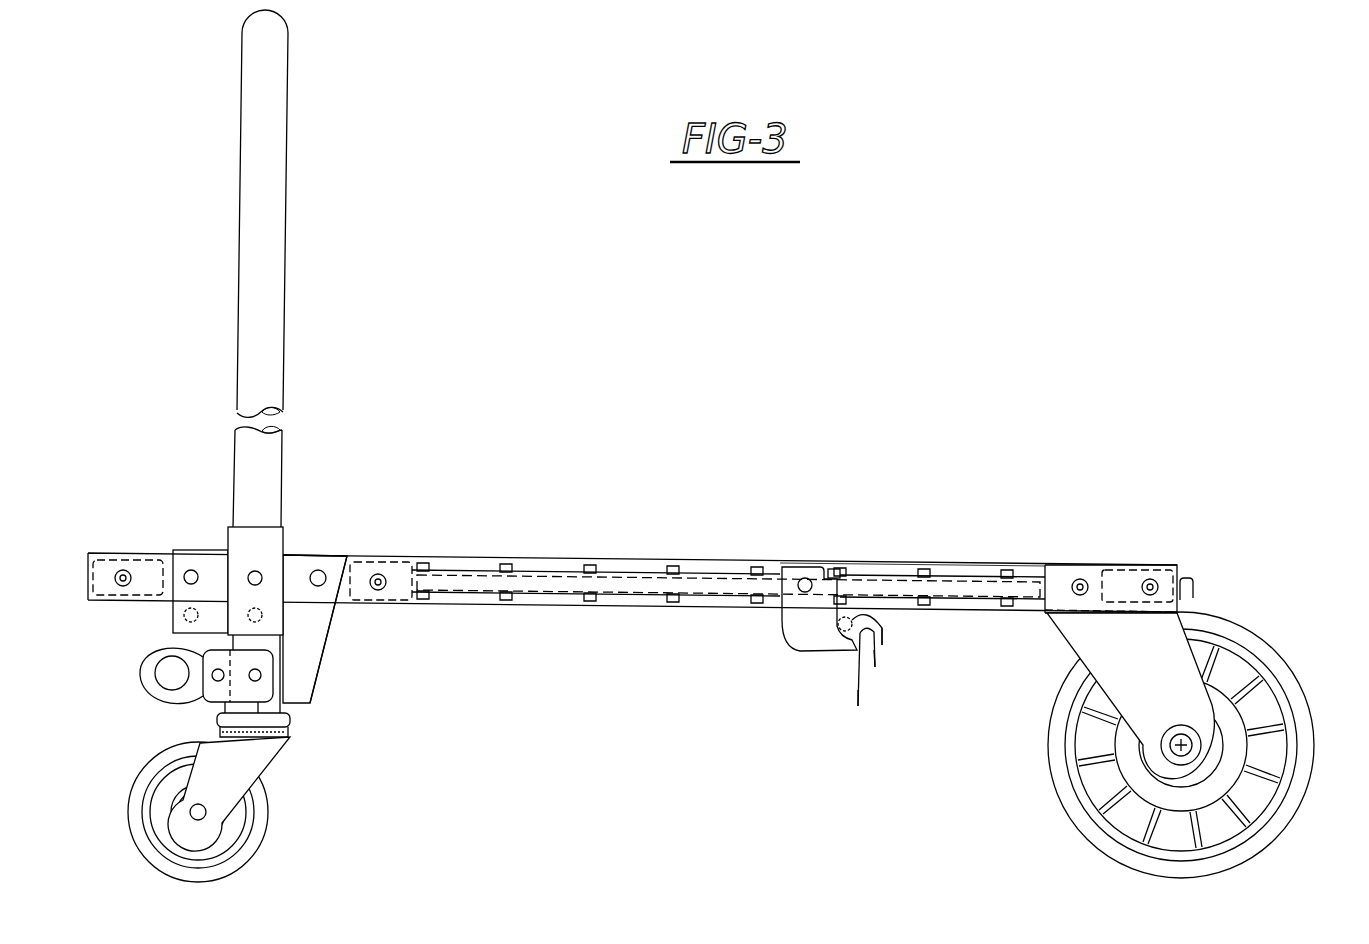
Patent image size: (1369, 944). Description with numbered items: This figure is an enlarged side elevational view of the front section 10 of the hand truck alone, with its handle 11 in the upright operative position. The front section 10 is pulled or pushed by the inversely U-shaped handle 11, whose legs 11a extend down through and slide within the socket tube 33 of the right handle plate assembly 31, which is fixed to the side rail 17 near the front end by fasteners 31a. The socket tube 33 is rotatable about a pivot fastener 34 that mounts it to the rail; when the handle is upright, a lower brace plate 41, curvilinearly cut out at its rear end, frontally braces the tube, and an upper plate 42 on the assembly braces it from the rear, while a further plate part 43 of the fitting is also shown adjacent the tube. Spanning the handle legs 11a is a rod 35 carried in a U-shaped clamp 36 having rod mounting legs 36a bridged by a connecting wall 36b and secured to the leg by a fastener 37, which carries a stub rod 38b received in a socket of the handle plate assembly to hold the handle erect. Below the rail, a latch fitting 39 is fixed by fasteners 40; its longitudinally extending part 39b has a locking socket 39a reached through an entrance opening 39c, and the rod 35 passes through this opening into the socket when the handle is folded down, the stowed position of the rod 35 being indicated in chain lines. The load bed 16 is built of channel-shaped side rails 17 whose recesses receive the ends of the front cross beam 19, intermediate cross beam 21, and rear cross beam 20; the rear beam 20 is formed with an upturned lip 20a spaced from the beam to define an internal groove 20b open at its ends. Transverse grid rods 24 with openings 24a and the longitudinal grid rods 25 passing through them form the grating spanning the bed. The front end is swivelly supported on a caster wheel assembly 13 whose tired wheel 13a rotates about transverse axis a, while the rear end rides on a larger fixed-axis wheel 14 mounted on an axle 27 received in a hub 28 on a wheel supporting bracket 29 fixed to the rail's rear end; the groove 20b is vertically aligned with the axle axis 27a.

The front section 10 is at (905, 428).
The handle 11 is at (290, 235).
The handle legs 11a is at (243, 447).
The caster wheel assembly 13 is at (120, 832).
The tired wheel 13a is at (268, 812).
The transverse axis a is at (203, 814).
The fixed axis rotatable wheel 14 is at (1296, 688).
The load supporting flatbed 16 is at (560, 558).
The side rail 17 is at (622, 560).
The front cross beam 19 is at (112, 565).
The rear cross beam 20 is at (1150, 570).
The upturned lip 20a is at (1196, 600).
The internal slit or groove 20b is at (1182, 578).
The intermediate cross beam 21 is at (400, 562).
The transverse grid rod 24 is at (915, 560).
The opening 24a is at (1020, 580).
The longitudinal grid rod 25 is at (1068, 583).
The axle 27 is at (1200, 757).
The axis of axle 27a is at (1183, 748).
The hub 28 is at (1200, 722).
The wheel supporting bracket 29 is at (1175, 627).
The right handle plate assembly 31 is at (334, 552).
The fastener 31a is at (330, 585).
The socket tube 33 is at (284, 530).
The pivot fastener 34 is at (260, 577).
The rod 35 is at (210, 700).
The U-shaped clamp 36 is at (214, 708).
The rod mounting leg 36a is at (202, 688).
The connecting wall 36b is at (172, 630).
The fastener 37 is at (258, 682).
The stub rod 38b is at (280, 724).
The latch fitting 39 is at (802, 642).
The locking socket 39a is at (860, 700).
The longitudinally extending part 39b is at (874, 666).
The latch entrance opening 39c is at (882, 645).
The fastener 40 is at (804, 590).
The lower brace plate 41 is at (220, 600).
The upper plate 42 is at (348, 557).
The wedge edge 43 is at (290, 622).